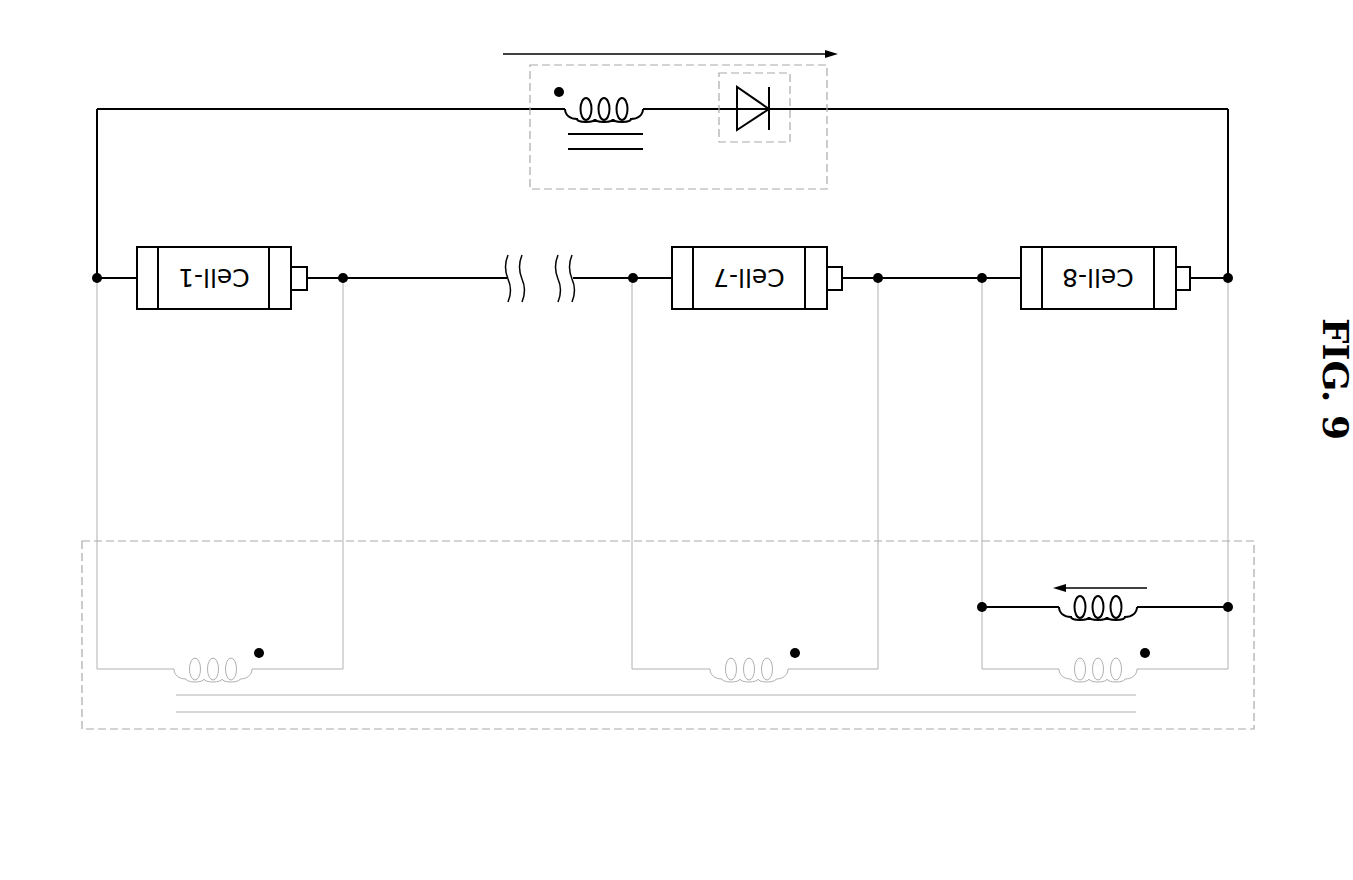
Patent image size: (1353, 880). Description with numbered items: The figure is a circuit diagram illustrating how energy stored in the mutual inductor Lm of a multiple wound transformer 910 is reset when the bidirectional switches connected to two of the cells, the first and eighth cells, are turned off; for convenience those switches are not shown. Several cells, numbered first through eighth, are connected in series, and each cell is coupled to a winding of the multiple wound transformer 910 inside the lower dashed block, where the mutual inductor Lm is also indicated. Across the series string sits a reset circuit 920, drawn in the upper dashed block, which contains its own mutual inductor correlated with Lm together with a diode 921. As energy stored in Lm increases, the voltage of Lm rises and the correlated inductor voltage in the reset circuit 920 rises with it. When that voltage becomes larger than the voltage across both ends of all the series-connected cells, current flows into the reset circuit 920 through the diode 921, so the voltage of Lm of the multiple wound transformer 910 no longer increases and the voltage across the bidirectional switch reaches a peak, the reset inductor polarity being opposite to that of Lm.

The multiple wound transformer 910 is at (1254, 642).
The reset circuit 920 is at (827, 142).
The diode 921 is at (788, 119).